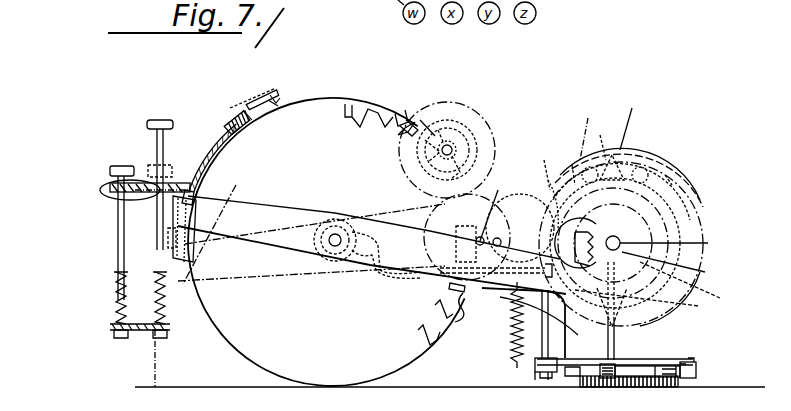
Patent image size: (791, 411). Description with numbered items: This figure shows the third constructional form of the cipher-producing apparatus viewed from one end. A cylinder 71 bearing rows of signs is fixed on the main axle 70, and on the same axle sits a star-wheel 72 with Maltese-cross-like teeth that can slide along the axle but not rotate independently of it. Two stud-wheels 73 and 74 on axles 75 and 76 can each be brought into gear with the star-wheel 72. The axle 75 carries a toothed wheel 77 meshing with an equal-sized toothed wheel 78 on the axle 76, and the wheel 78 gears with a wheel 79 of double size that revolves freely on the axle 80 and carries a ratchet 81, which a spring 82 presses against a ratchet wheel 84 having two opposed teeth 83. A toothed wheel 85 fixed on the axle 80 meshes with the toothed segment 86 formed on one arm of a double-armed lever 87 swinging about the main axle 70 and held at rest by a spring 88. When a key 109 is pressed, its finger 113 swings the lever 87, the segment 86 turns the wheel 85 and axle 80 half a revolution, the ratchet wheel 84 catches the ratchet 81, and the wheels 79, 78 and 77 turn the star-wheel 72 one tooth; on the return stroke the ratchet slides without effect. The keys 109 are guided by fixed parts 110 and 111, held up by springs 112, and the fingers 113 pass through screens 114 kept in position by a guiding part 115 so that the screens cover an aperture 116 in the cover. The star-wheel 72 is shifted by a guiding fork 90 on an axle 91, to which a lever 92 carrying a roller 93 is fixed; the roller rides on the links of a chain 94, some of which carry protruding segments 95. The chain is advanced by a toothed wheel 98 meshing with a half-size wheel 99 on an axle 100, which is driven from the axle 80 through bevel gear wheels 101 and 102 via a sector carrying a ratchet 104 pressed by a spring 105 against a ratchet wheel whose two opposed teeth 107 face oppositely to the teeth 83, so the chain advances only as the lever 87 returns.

The main axle 70 is at (330, 232).
The cylinder 71 is at (328, 102).
The star-wheel 72 is at (388, 106).
The stud-wheel 73 is at (450, 140).
The stud-wheel 74 is at (520, 210).
The axle 75 is at (452, 148).
The axle 76 is at (496, 204).
The toothed wheel 77 is at (438, 120).
The toothed wheel 78 is at (440, 216).
The toothed wheel 79 is at (632, 121).
The axle 80 is at (635, 244).
The ratchet 81 is at (669, 168).
The spring 82 is at (629, 177).
The teeth 83 is at (647, 222).
The ratchet wheel 84 is at (579, 164).
The toothed wheel 85 is at (653, 255).
The toothed segment 86 is at (515, 303).
The double-armed lever 87 is at (224, 206).
The spring 88 is at (510, 343).
The guiding fork 90 is at (372, 240).
The axle 91 is at (540, 348).
The lever 92 is at (628, 364).
The roller 93 is at (697, 362).
The chain 94 is at (650, 366).
The protruding segment 95 is at (672, 366).
The toothed wheel 98 is at (682, 382).
The toothed wheel 99 is at (590, 375).
The axle 100 is at (587, 333).
The bevel gear wheel 101 is at (695, 282).
The bevel gear wheel 102 is at (648, 212).
The ratchet 104 is at (592, 127).
The spring 105 is at (542, 188).
The teeth 107 is at (625, 246).
The key 109 is at (147, 130).
The fixed guiding part 110 is at (116, 248).
The fixed guiding part 111 is at (140, 333).
The spring 112 is at (165, 286).
The finger 113 is at (110, 188).
The screen 114 is at (210, 136).
The guiding part 115 is at (222, 128).
The aperture 116 is at (254, 104).